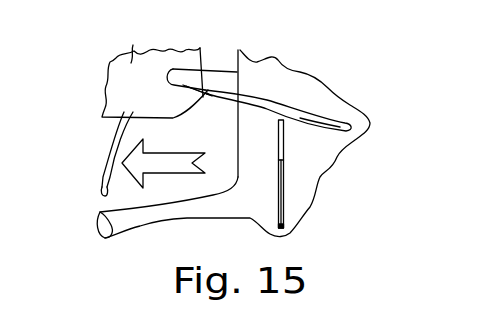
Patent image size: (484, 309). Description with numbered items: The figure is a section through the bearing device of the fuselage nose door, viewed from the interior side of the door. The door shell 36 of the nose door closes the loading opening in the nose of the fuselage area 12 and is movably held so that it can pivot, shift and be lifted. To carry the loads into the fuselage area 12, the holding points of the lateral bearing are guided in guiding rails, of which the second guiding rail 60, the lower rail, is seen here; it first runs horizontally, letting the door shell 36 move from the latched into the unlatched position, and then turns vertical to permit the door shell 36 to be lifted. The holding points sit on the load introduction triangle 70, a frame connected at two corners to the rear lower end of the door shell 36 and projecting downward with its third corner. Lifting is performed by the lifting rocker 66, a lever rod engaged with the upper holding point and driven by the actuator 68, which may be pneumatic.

The fuselage area 12 is at (100, 240).
The door shell 36 is at (134, 64).
The second guiding rail 60 is at (212, 77).
The lifting rocker 66 is at (287, 112).
The actuator 68 is at (282, 173).
The load introduction triangle 70 is at (110, 148).